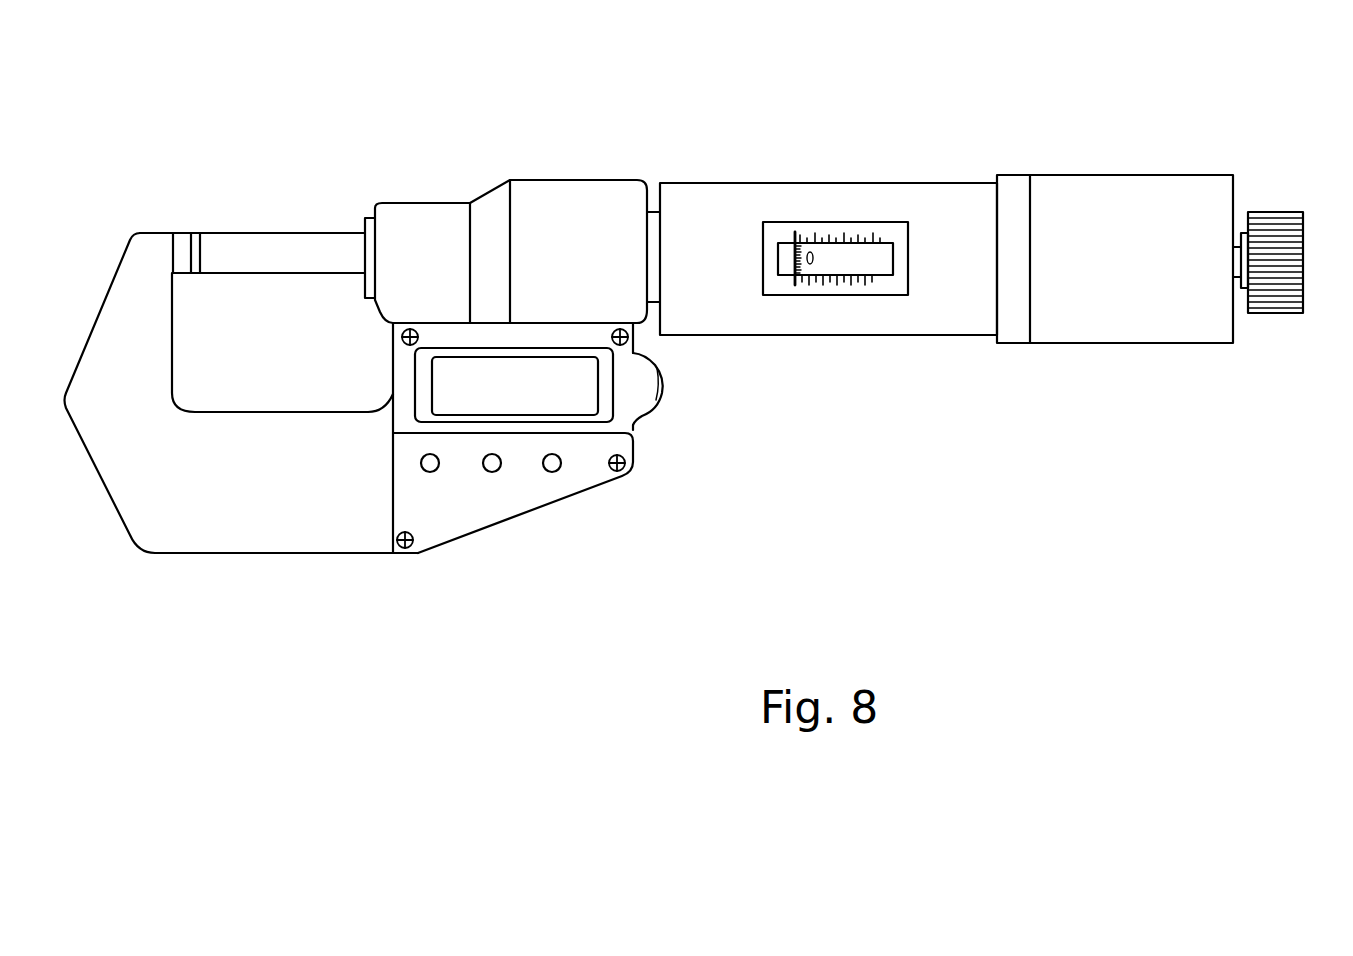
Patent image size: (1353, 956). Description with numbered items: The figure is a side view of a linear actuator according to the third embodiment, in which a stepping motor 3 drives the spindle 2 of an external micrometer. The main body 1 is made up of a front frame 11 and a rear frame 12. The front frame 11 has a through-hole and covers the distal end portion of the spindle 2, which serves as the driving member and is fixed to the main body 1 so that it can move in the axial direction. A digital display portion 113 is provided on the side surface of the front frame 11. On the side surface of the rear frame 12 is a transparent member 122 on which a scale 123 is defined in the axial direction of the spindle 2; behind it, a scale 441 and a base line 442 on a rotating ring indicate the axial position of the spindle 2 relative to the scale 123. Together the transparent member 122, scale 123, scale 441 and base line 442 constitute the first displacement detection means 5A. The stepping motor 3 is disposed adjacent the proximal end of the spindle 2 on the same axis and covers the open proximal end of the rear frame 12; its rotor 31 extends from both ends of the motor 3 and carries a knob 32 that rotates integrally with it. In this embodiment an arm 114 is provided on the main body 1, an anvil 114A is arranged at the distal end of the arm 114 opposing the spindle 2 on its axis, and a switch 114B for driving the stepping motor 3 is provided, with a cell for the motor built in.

The main body 1 is at (723, 72).
The front frame 11 is at (588, 197).
The rear frame 12 is at (702, 197).
The spindle 2 is at (273, 247).
The stepping motor 3 is at (1078, 322).
The rotor 31 is at (1237, 230).
The knob 32 is at (1280, 223).
The first displacement detection means 5A is at (960, 90).
The base line 442 is at (792, 257).
The scale 441 is at (803, 241).
The scale 123 is at (852, 232).
The transparent member 122 is at (882, 256).
The digital display portion 113 is at (568, 400).
The arm 114 is at (317, 523).
The anvil 114A is at (187, 248).
The switch 114B is at (660, 390).